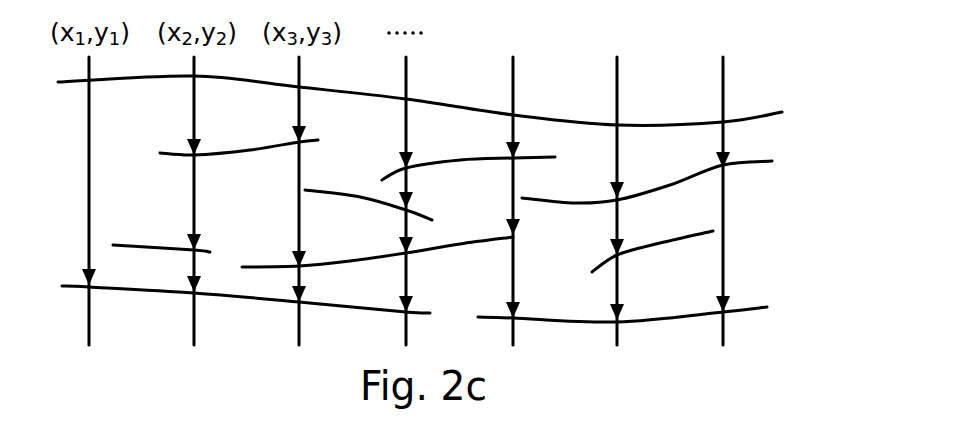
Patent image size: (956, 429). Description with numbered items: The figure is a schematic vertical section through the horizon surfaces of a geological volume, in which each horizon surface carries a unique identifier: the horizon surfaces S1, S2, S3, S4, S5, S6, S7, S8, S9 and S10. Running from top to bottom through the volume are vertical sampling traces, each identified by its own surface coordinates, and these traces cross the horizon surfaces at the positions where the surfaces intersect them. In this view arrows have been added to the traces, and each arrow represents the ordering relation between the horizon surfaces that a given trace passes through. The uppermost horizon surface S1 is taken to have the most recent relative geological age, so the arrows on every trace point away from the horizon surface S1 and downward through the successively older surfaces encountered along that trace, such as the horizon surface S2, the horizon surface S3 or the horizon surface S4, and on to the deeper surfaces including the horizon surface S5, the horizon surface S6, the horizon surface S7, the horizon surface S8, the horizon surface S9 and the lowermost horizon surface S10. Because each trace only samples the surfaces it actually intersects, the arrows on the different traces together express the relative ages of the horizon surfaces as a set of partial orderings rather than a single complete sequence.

The horizon surface S1 is at (420, 96).
The horizon surface S2 is at (239, 135).
The horizon surface S3 is at (468, 153).
The horizon surface S4 is at (647, 182).
The horizon surface S5 is at (368, 190).
The horizon surface S6 is at (161, 230).
The horizon surface S7 is at (377, 246).
The horizon surface S8 is at (652, 237).
The horizon surface S9 is at (246, 286).
The horizon surface S10 is at (622, 305).